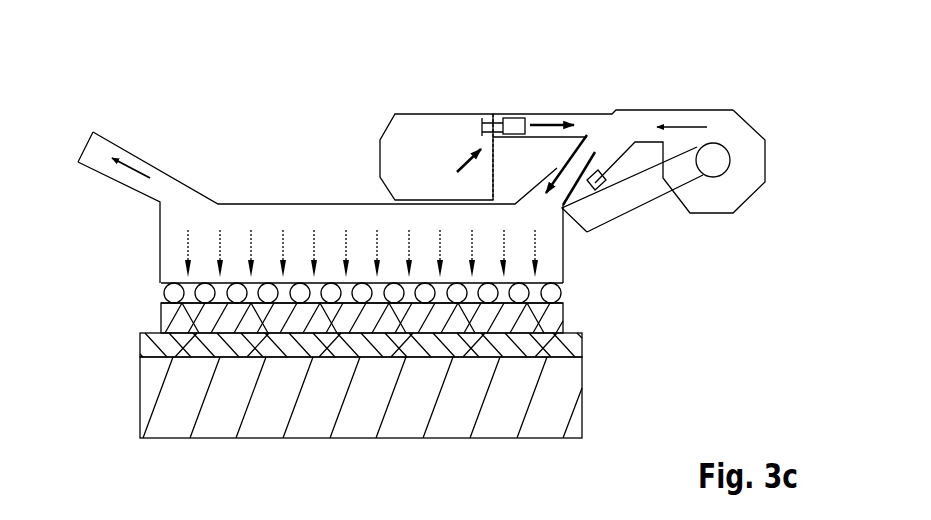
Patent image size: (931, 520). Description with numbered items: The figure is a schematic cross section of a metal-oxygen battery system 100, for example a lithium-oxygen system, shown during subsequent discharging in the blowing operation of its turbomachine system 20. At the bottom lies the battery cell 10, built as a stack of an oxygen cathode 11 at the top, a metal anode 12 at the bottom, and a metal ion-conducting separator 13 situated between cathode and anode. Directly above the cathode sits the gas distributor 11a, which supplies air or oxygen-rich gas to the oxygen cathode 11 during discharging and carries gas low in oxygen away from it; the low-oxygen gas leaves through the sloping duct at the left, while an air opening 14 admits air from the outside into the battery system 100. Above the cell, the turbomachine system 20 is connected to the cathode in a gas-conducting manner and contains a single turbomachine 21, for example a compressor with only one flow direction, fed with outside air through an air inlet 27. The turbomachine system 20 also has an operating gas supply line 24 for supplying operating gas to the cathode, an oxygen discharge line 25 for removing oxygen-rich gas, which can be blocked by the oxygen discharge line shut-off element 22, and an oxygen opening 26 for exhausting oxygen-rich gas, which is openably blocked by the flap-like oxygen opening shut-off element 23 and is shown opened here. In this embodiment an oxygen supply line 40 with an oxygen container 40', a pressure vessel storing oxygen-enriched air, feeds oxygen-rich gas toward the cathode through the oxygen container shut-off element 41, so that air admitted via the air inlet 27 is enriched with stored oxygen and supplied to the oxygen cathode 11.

The metal-oxygen battery system 100 is at (417, 56).
The battery cell 10 is at (692, 296).
The oxygen cathode 11 is at (170, 317).
The gas distributor 11a is at (170, 292).
The metal anode 12 is at (150, 395).
The metal ion-conducting separator 13 is at (150, 345).
The air opening 14 is at (186, 203).
The turbomachine system 20 is at (728, 101).
The turbomachine 21 is at (717, 203).
The oxygen discharge line shut-off element 22 is at (578, 210).
The oxygen opening shut-off element 23 is at (570, 150).
The operating gas supply line 24 is at (555, 180).
The oxygen discharge line 25 is at (643, 200).
The oxygen opening 26 is at (600, 128).
The air inlet 27 is at (756, 119).
The oxygen supply line 40 is at (516, 106).
The oxygen container 40' is at (407, 157).
The oxygen container shut-off element 41 is at (513, 117).